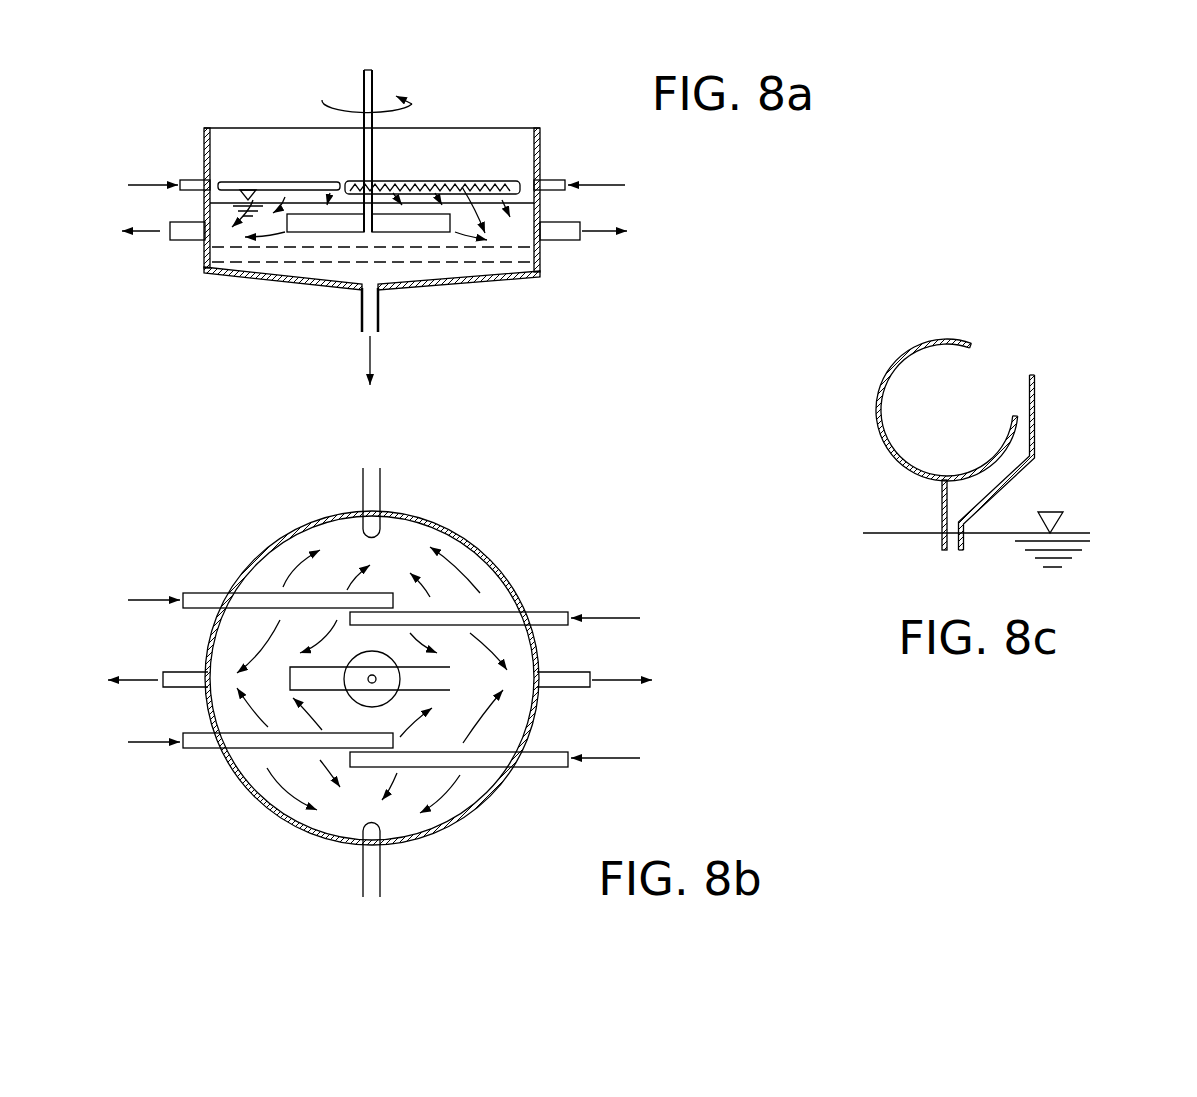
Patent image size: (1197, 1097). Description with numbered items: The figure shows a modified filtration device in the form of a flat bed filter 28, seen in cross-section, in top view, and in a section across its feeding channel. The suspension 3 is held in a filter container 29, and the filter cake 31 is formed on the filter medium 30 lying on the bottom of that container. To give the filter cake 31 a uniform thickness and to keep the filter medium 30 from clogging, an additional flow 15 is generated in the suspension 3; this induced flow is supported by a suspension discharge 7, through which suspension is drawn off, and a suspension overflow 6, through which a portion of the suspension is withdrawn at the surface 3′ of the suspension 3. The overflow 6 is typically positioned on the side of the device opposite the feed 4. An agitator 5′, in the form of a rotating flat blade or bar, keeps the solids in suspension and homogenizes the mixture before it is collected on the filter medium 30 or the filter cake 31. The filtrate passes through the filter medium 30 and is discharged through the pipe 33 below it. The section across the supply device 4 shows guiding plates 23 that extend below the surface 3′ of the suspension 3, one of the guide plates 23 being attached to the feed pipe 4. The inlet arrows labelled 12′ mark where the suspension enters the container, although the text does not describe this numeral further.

In FIG. 8a, the filter container 29 is at (203, 133).
In FIG. 8b, the filter container 29 is at (497, 796).
In FIG. 8a, the flat bed filter 28 is at (462, 127).
In FIG. 8a, the filter medium 30 is at (292, 267).
In FIG. 8a, the pipe 33 is at (360, 332).
In FIG. 8a, the inlet pipe 12′ is at (378, 192).
In FIG. 8b, the inlet pipe 12′ is at (382, 678).
In FIG. 8a, the feed 4 is at (500, 178).
In FIG. 8b, the feed 4 is at (520, 612).
In FIG. 8c, the feed 4 is at (880, 405).
In FIG. 8a, the suspension discharge 7 is at (160, 232).
In FIG. 8b, the suspension discharge 7 is at (150, 680).
In FIG. 8a, the flow 15 is at (470, 250).
In FIG. 8b, the flow 15 is at (455, 568).
In FIG. 8a, the agitator 5′ is at (310, 222).
In FIG. 8a, the filter cake 31 is at (407, 258).
In FIG. 8a, the suspension 3 is at (510, 228).
In FIG. 8c, the suspension 3 is at (982, 599).
In FIG. 8b, the suspension overflow 6 is at (365, 485).
In FIG. 8c, the guiding plates 23 is at (1035, 437).
In FIG. 8c, the surface 3′ is at (1073, 532).